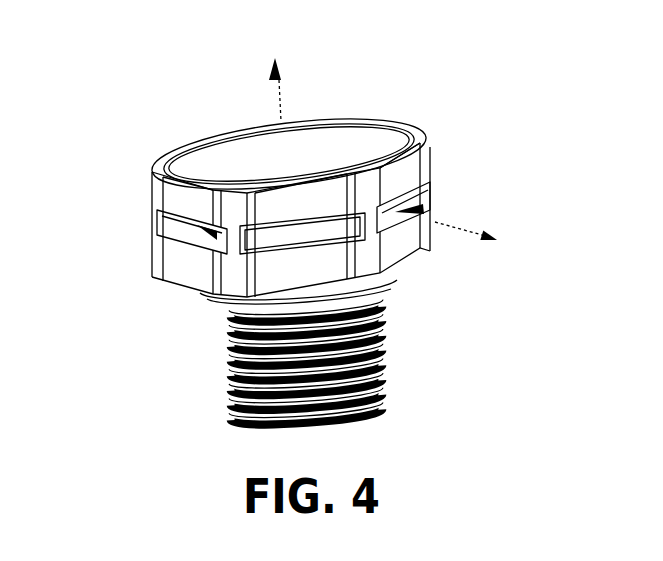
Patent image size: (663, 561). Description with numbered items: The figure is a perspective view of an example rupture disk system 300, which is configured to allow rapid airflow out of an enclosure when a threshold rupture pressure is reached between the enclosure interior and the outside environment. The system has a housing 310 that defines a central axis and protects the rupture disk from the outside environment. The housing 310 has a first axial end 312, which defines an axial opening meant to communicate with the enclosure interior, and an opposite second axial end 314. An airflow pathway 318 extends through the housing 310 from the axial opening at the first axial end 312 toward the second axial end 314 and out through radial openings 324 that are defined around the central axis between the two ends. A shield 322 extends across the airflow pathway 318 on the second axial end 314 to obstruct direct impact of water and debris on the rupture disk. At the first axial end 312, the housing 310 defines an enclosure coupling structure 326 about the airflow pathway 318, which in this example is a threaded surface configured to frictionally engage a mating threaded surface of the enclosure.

The rupture disk system 300 is at (295, 244).
The housing 310 is at (411, 170).
The first axial end 312 is at (305, 392).
The second axial end 314 is at (280, 195).
The airflow pathway 318 is at (433, 220).
The shield 322 is at (348, 152).
The radial openings 324 is at (167, 226).
The enclosure coupling structure 326 is at (384, 336).